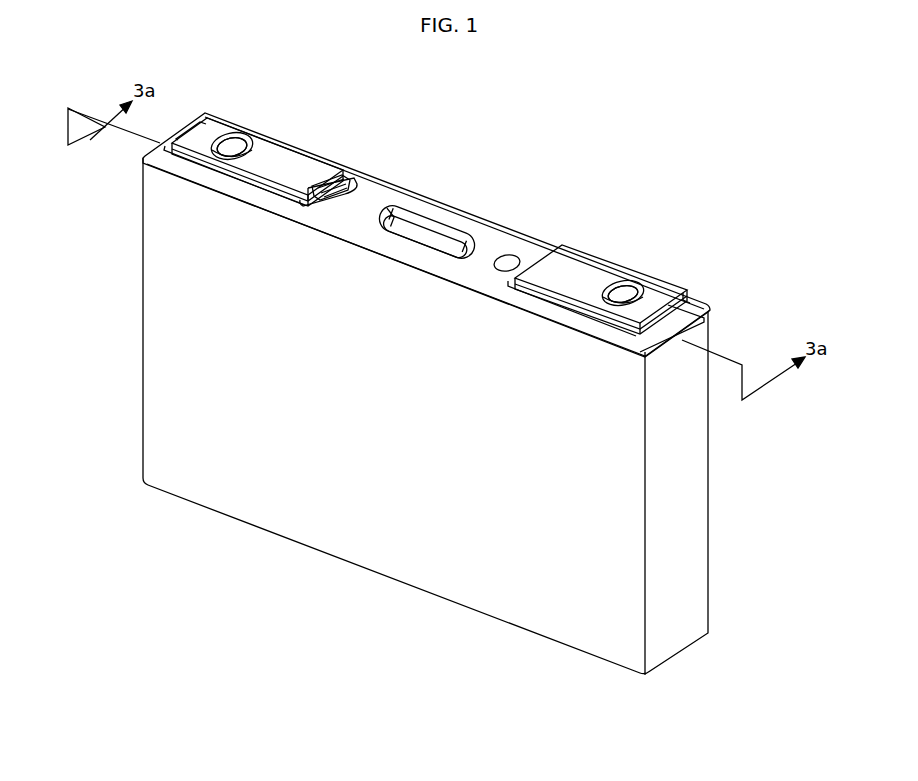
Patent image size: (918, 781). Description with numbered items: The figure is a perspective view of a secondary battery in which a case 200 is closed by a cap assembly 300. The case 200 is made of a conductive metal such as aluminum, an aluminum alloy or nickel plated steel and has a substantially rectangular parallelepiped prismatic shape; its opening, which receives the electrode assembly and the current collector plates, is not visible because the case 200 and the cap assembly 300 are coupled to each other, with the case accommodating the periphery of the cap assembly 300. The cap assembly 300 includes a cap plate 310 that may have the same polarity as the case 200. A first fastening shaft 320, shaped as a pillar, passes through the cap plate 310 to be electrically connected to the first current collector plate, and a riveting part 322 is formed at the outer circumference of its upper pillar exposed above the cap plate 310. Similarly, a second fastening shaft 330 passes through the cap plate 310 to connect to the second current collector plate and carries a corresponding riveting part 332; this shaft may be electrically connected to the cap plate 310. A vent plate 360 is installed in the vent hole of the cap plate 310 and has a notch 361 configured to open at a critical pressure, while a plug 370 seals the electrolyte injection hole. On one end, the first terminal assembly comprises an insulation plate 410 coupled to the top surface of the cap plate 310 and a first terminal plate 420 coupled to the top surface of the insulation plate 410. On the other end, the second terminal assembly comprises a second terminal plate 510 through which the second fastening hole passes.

The case 200 is at (695, 480).
The cap assembly 300 is at (430, 208).
The cap plate 310 is at (493, 228).
The first fastening shaft 320 is at (230, 138).
The riveting part 322 is at (247, 140).
The second fastening shaft 330 is at (622, 290).
The riveting part 332 is at (645, 288).
The vent plate 360 is at (443, 236).
The notch 361 is at (412, 223).
The plug 370 is at (512, 257).
The insulation plate 410 is at (352, 178).
The first terminal plate 420 is at (292, 155).
The second terminal plate 510 is at (580, 260).